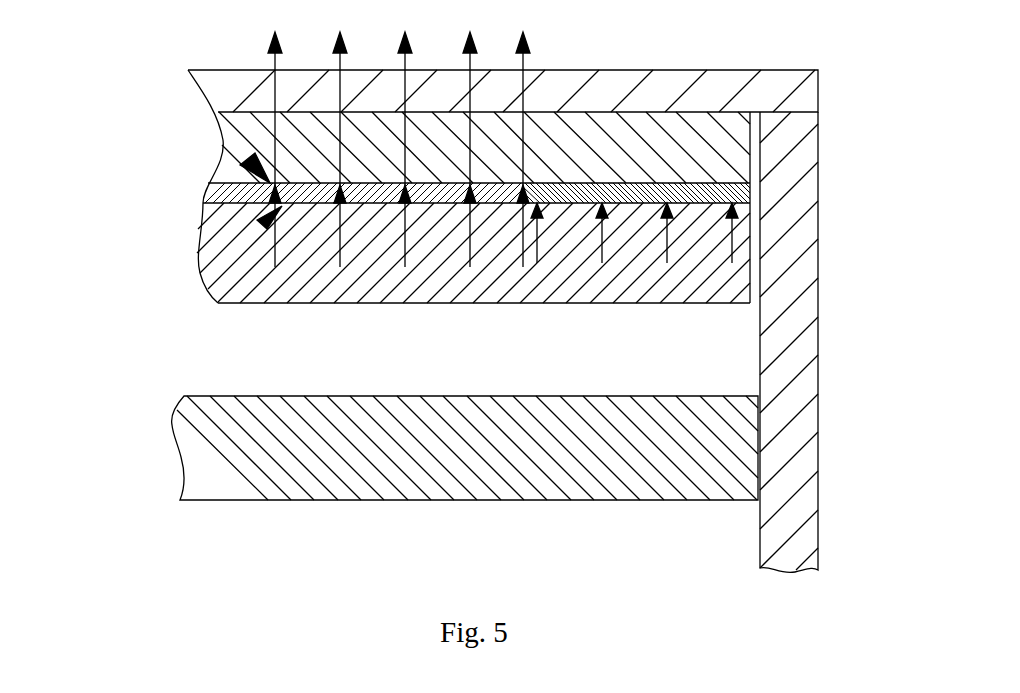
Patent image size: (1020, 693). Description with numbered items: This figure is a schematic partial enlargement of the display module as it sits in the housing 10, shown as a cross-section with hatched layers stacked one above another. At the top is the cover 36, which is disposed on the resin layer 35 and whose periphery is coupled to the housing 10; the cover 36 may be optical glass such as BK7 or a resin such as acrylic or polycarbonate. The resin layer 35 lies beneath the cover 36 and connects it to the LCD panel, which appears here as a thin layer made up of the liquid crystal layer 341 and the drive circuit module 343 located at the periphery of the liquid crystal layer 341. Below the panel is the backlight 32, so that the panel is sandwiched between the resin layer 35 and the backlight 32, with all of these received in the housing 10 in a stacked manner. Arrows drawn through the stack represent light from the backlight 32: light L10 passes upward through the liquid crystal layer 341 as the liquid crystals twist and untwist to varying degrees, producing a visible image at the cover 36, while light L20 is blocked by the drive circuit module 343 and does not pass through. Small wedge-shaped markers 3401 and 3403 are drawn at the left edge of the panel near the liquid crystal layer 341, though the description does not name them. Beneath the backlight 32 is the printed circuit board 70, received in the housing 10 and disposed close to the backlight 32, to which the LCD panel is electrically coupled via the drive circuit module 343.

The housing 10 is at (782, 317).
The backlight 32 is at (215, 288).
The resin layer 35 is at (744, 167).
The cover 36 is at (767, 82).
The printed circuit board 70 is at (203, 467).
The liquid crystal layer 341 is at (205, 196).
The drive circuit module 343 is at (743, 188).
The incident light 3401 is at (225, 138).
The reflected light 3403 is at (258, 226).
The light L10 is at (245, 272).
The light L20 is at (728, 230).